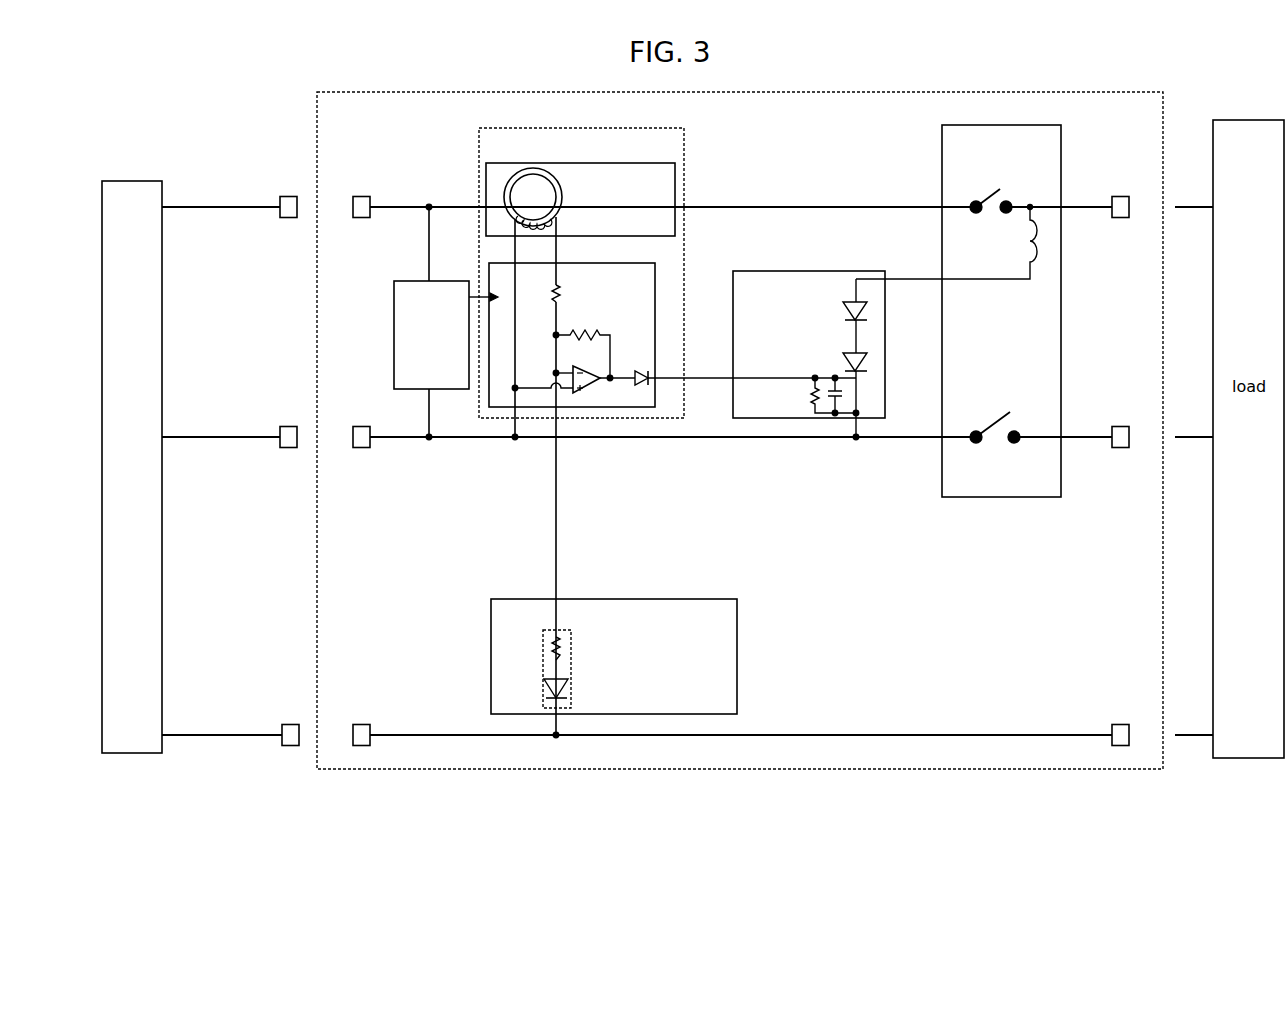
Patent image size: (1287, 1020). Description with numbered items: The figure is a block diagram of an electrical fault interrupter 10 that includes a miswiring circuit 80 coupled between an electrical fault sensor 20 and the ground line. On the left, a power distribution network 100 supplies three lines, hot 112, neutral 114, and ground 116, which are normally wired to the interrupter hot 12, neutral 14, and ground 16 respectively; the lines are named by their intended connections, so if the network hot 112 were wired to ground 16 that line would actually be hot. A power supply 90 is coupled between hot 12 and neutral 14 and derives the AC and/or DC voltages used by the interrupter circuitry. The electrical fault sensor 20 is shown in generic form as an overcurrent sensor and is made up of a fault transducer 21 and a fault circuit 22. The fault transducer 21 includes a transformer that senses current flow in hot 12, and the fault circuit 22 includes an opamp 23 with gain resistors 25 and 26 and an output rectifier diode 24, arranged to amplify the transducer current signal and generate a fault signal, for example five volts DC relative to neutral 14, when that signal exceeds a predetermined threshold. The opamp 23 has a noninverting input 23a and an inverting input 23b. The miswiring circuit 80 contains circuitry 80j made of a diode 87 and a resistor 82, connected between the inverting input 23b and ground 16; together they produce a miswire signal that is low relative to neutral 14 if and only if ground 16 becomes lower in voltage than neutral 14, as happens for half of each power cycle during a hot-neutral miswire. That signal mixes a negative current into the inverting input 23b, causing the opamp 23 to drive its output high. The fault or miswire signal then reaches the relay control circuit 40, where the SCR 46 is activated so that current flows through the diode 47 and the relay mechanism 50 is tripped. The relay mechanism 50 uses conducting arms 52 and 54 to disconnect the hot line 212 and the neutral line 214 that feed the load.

The power distribution network 100 is at (132, 467).
The hot line of power distribution network 112 is at (190, 206).
The neutral line of power distribution network 114 is at (193, 437).
The ground line of power distribution network 116 is at (195, 735).
The electrical fault interrupter device 10 is at (443, 769).
The hot line 12 is at (456, 206).
The neutral line 14 is at (465, 438).
The ground line 16 is at (413, 734).
The electrical fault sensor 20 is at (702, 145).
The fault transducer 21 is at (580, 300).
The fault circuit 22 is at (572, 499).
The opamp 23 is at (593, 398).
The noninverting input 23a is at (575, 398).
The inverting input 23b is at (558, 384).
The output rectifier diode 24 is at (640, 386).
The gain resistor 25 is at (610, 337).
The gain resistor 26 is at (556, 296).
The relay control circuit 40 is at (889, 322).
The SCR 46 is at (868, 366).
The diode 47 is at (868, 311).
The relay mechanism 50 is at (1001, 311).
The conducting arm 52 is at (1000, 191).
The conducting arm 54 is at (994, 422).
The miswiring circuit 80 is at (614, 656).
The circuitry 80j is at (543, 641).
The resistor 82 is at (561, 642).
The diode 87 is at (569, 686).
The power supply 90 is at (446, 322).
The hot line 212 is at (1087, 208).
The neutral line 214 is at (1088, 438).